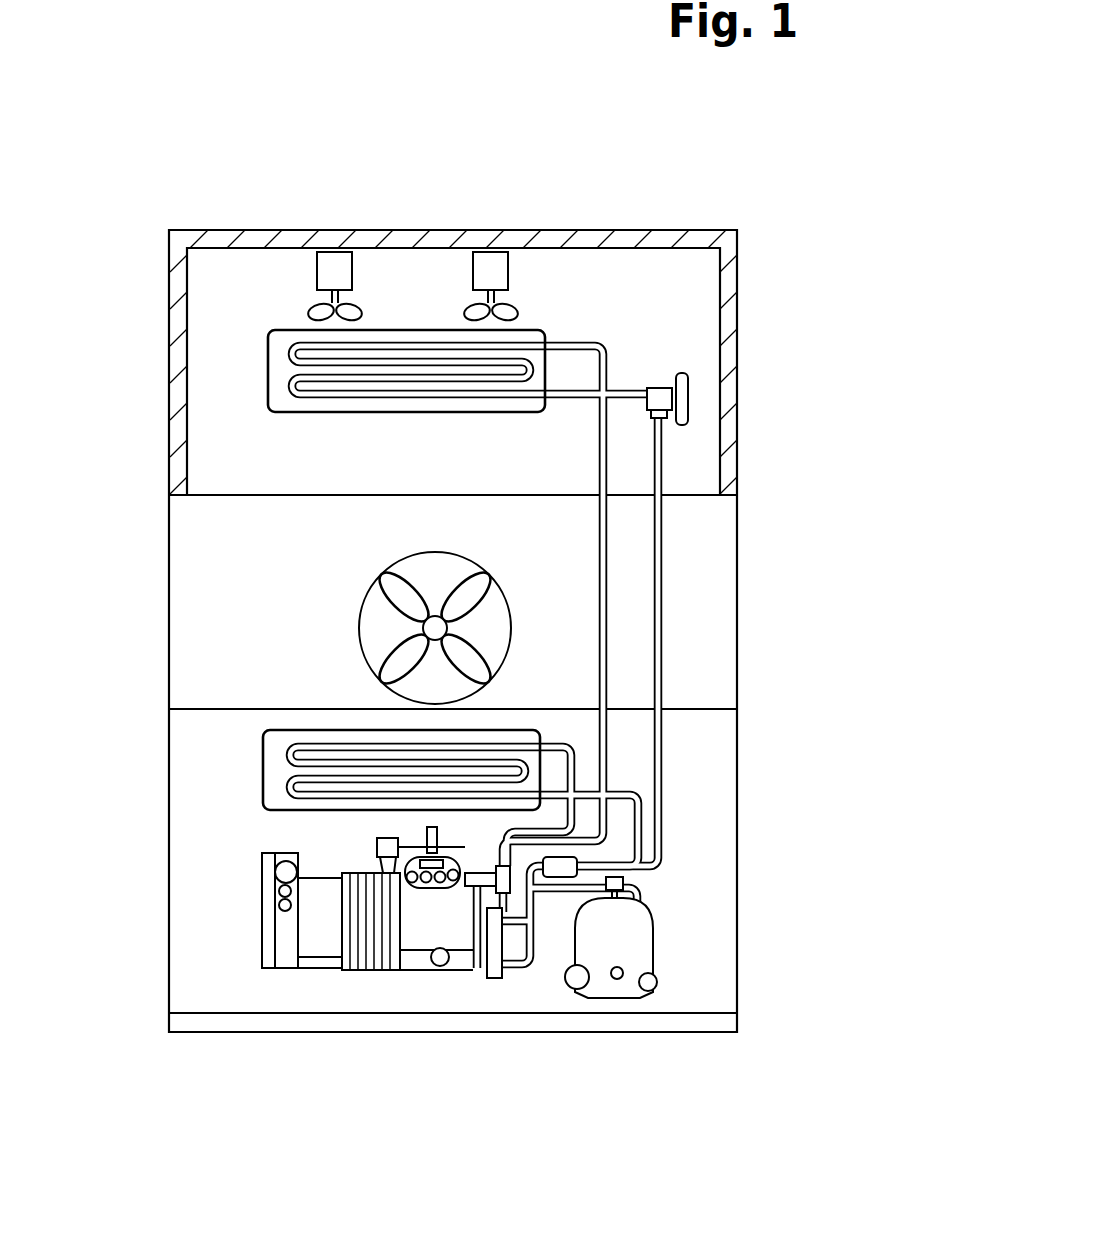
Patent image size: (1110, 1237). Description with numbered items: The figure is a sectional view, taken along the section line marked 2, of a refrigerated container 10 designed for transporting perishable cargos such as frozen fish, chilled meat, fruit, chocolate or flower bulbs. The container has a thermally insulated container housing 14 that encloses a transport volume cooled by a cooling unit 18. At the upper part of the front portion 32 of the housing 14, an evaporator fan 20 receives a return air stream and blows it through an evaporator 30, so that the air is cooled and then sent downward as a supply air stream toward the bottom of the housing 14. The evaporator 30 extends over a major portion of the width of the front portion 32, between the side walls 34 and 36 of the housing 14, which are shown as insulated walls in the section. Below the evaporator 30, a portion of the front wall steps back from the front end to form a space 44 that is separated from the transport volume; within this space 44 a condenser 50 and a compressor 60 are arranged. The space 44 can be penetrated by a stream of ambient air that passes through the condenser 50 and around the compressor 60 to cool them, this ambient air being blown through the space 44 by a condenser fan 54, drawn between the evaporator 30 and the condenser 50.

The refrigerated container 10 is at (773, 219).
The container housing 14 is at (612, 228).
The side wall 36 is at (730, 330).
The side wall 34 is at (178, 380).
The front portion 32 is at (691, 565).
The space 44 is at (705, 672).
The evaporator fan 20 is at (468, 228).
The evaporator 30 is at (268, 411).
The condenser 50 is at (262, 775).
The cooling unit 18 is at (355, 595).
The condenser fan 54 is at (430, 630).
The compressor 60 is at (323, 926).
The section line of FIG. 2 is at (299, 207).